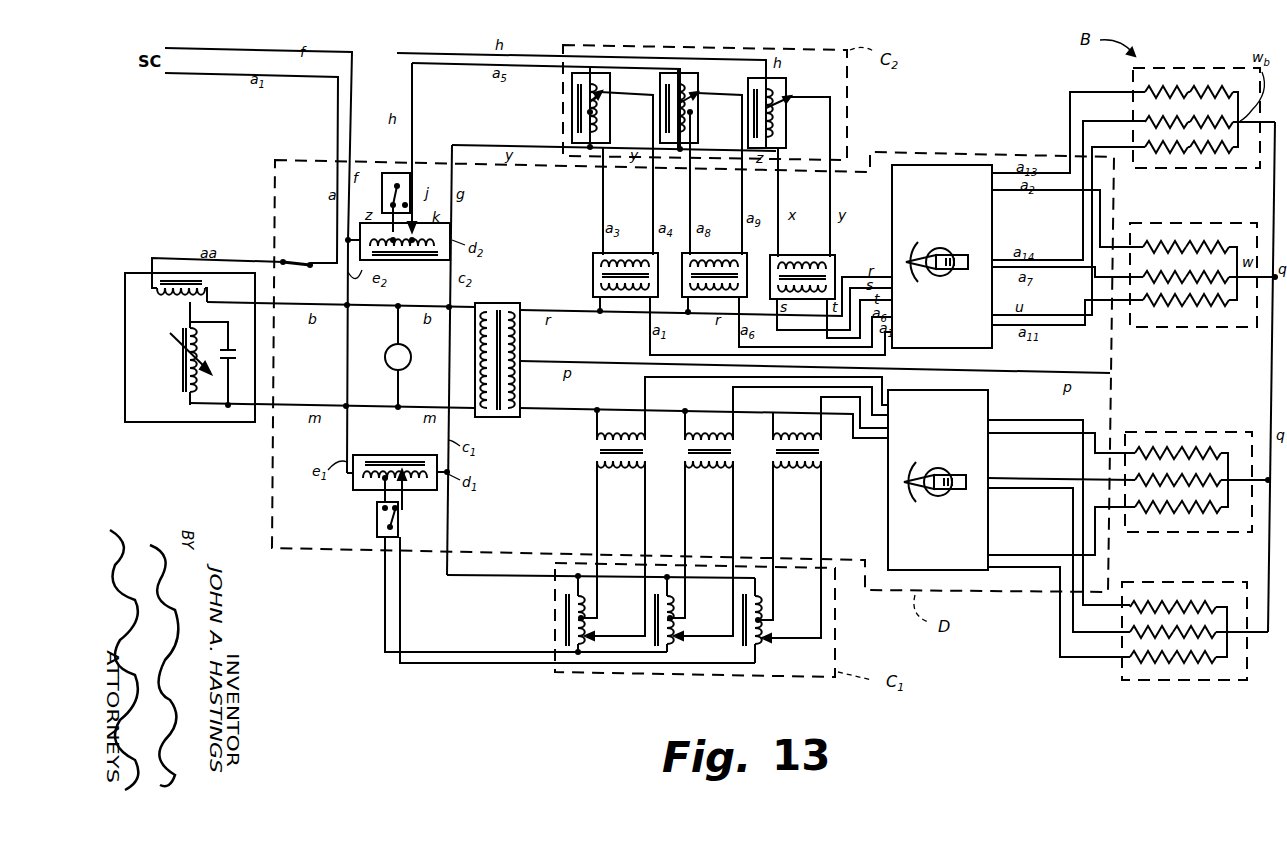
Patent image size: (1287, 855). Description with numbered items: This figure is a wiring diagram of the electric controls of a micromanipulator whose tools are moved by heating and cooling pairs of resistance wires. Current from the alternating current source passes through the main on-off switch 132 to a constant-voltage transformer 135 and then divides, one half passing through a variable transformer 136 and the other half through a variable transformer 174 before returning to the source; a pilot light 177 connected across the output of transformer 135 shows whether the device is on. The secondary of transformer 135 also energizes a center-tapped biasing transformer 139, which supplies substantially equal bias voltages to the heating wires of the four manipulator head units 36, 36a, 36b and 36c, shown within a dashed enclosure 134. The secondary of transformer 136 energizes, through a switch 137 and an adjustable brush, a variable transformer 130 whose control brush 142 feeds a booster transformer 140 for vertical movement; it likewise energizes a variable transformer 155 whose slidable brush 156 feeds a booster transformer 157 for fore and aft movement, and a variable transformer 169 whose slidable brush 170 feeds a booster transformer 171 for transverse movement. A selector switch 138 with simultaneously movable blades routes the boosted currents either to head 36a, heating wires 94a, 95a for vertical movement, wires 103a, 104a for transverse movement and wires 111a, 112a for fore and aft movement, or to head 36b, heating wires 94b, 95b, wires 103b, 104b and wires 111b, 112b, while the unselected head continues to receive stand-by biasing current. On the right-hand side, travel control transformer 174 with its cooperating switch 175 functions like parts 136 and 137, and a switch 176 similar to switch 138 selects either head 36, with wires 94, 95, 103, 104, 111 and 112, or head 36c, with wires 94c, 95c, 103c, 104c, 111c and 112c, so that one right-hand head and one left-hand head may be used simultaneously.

The variable transformer 130 is at (788, 109).
The main on-off switch 132 is at (292, 258).
The control unit enclosure 134 is at (882, 150).
The constant-voltage transformer 135 is at (178, 424).
The variable transformer 136 is at (452, 226).
The switch 137 is at (382, 196).
The selector switch 138 is at (984, 222).
The biasing transformer 139 is at (507, 420).
The booster transformer 140 is at (835, 262).
The control brush 142 is at (790, 90).
The variable transformer 155 is at (582, 107).
The slidable brush 156 is at (603, 88).
The booster transformer 157 is at (593, 270).
The variable transformer 169 is at (700, 109).
The slidable brush 170 is at (699, 90).
The booster transformer 171 is at (746, 254).
The variable transformer 174 is at (420, 456).
The switch 175 is at (377, 525).
The switch 176 is at (988, 530).
The pilot light 177 is at (385, 357).
The manipulator head unit 36 is at (1198, 469).
The manipulator head unit 36a is at (1204, 261).
The manipulator head unit 36b is at (1204, 104).
The manipulator head unit 36c is at (1195, 618).
The resistance wire 94 is at (1156, 446).
The resistance wire 95 is at (1199, 446).
The resistance wire 103 is at (1156, 473).
The resistance wire 104 is at (1199, 473).
The resistance wire 111 is at (1156, 514).
The resistance wire 112 is at (1200, 514).
The resistance wire 94a is at (1164, 309).
The resistance wire 95a is at (1208, 309).
The thermal expansion wire 103a is at (1164, 269).
The thermal expansion wire 104a is at (1207, 269).
The heating wire 111a is at (1164, 239).
The heating wire 112a is at (1207, 239).
The resistance wire 94b is at (1166, 154).
The resistance wire 95b is at (1211, 154).
The heating wire 103b is at (1166, 114).
The heating wire 104b is at (1211, 114).
The heating wire 111b is at (1166, 85).
The heating wire 112b is at (1211, 85).
The resistance wire 94c is at (1151, 599).
The resistance wire 95c is at (1195, 599).
The resistance wire 103c is at (1151, 625).
The resistance wire 104c is at (1196, 625).
The resistance wire 111c is at (1151, 663).
The resistance wire 112c is at (1200, 663).